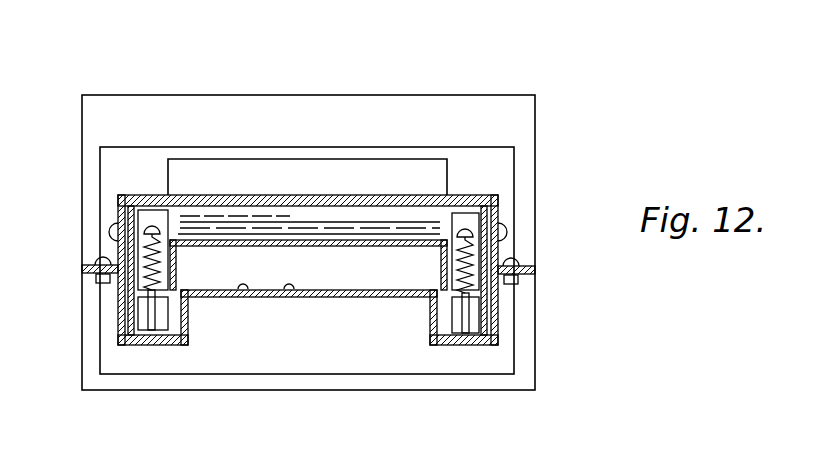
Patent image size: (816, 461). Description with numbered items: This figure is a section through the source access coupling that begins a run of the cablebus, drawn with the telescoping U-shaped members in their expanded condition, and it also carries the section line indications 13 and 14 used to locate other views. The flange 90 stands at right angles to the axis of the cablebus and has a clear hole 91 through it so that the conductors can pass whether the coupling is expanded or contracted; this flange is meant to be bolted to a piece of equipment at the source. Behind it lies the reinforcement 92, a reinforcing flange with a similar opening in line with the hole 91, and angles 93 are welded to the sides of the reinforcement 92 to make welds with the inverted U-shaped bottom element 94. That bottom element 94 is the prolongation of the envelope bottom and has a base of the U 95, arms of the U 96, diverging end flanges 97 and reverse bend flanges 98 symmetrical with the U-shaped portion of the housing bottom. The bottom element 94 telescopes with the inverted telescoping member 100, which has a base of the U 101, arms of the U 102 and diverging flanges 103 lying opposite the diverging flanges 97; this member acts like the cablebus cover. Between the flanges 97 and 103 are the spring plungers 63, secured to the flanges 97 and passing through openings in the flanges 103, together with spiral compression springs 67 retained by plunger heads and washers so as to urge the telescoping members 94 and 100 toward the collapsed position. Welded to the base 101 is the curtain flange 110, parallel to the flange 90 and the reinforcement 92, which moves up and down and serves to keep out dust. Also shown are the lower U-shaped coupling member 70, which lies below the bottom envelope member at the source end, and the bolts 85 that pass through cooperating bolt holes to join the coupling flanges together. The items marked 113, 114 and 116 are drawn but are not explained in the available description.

The section line 13- 13 is at (308, 94).
The section line 14- 14 is at (65, 268).
The spring plungers 63 is at (132, 205).
The spiral compression springs 67 is at (134, 247).
The U-shaped member 70 is at (350, 299).
The bolts 85 is at (517, 257).
The flange 90 is at (460, 110).
The hole 91 is at (352, 261).
The reinforcement 92 is at (507, 168).
The angles 93 is at (156, 217).
The inverted U-shaped bottom element 94 is at (298, 298).
The base of the U 95 is at (248, 298).
The arms of the U 96 is at (187, 318).
The diverging end flanges 97 is at (163, 338).
The reverse bend flanges 98 is at (122, 325).
The inverted telescoping member 100 is at (233, 246).
The base of the U 101 is at (360, 238).
The arms of the U 102 is at (177, 265).
The diverging flanges 103 is at (474, 310).
The curtain flange 110 is at (377, 173).
The layer 113 is at (305, 194).
The layer 114 is at (232, 194).
The bolt 116 is at (95, 262).